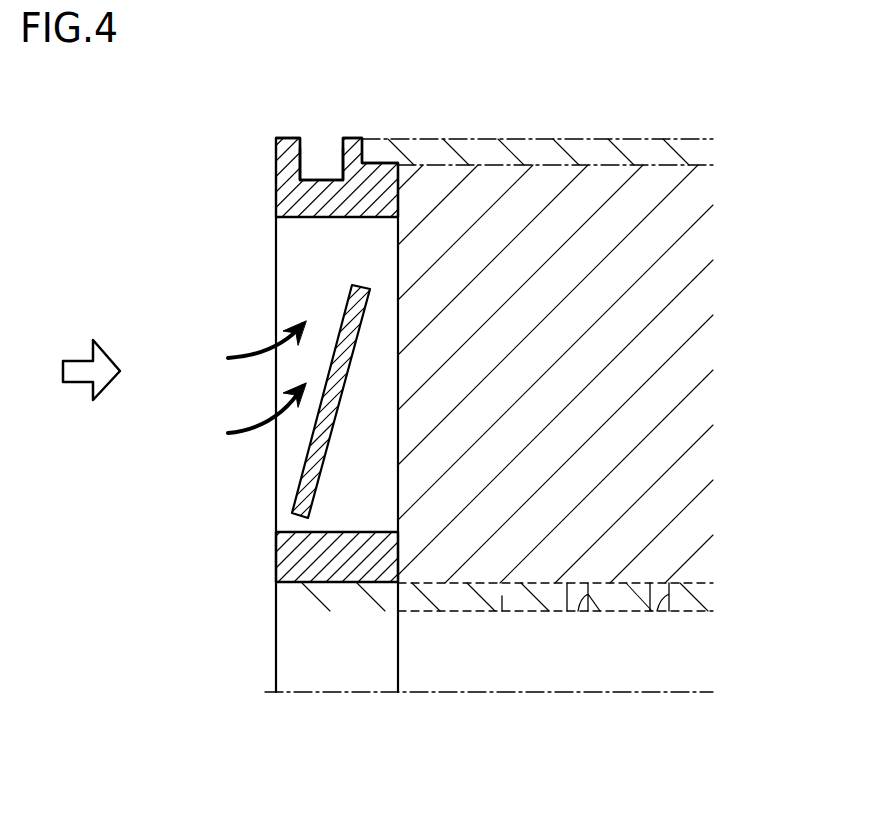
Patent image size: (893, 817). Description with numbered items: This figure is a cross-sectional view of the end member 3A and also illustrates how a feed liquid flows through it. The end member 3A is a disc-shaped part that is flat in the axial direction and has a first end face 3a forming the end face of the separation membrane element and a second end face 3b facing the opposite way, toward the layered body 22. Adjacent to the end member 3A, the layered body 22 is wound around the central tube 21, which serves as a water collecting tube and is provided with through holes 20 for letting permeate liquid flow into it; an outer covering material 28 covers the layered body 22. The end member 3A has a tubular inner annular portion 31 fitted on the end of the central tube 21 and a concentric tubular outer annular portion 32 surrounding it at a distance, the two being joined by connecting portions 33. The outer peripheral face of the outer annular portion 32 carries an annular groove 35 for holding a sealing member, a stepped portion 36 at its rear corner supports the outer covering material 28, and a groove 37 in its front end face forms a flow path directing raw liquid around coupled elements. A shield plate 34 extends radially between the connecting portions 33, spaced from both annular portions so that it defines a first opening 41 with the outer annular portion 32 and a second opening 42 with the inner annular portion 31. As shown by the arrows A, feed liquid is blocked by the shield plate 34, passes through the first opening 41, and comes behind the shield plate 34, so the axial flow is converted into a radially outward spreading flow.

The end member 3A is at (189, 127).
The first end face 3a is at (276, 265).
The second end face 3b is at (398, 263).
The through holes 20 is at (655, 611).
The central tube 21 is at (502, 611).
The layered body 22 is at (668, 363).
The outer covering material 28 is at (537, 160).
The inner annular portion 31 is at (277, 566).
The outer annular portion 32 is at (286, 140).
The connecting portions 33 is at (297, 295).
The shield plate 34 is at (327, 423).
The annular groove 35 is at (320, 152).
The stepped portion 36 is at (383, 150).
The groove 37 is at (277, 172).
The first opening 41 is at (343, 249).
The second opening 42 is at (292, 518).
The arrows A is at (257, 358).